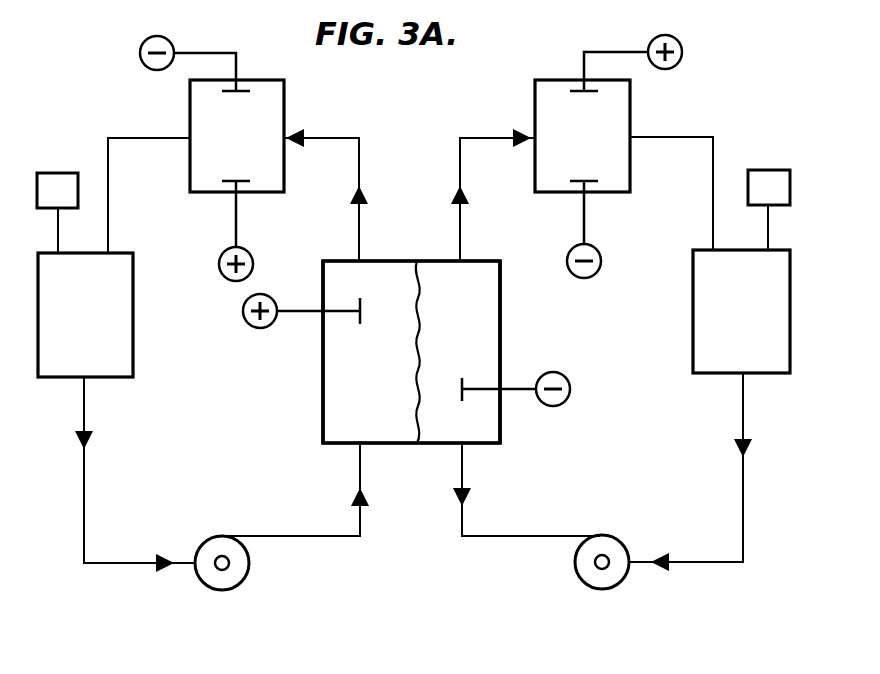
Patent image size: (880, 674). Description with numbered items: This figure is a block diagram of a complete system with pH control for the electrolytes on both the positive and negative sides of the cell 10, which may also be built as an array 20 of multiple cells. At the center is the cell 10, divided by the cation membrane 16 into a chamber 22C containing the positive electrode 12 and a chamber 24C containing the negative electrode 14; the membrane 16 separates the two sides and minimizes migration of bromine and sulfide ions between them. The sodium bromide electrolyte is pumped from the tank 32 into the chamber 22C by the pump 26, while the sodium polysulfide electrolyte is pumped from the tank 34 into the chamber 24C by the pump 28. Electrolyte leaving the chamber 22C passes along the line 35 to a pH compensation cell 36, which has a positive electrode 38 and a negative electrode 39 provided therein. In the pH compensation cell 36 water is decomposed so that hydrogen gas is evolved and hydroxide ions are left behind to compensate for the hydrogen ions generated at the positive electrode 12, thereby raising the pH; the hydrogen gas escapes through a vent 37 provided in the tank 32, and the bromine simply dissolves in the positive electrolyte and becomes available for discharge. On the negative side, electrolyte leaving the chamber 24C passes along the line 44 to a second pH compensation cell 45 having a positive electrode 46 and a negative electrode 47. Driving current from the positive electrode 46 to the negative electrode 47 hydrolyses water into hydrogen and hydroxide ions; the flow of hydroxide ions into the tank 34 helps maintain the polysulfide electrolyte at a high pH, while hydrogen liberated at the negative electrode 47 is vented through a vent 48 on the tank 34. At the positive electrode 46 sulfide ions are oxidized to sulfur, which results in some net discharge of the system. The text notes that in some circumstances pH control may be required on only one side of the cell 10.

The cell 10 is at (499, 311).
The array 20 is at (499, 311).
The positive electrode 12 is at (277, 318).
The negative electrode 14 is at (522, 390).
The cation membrane 16 is at (420, 264).
The chamber 22C is at (322, 382).
The chamber 24C is at (485, 343).
The pump 26 is at (242, 563).
The pump 28 is at (578, 568).
The tank 32 is at (133, 312).
The tank 34 is at (693, 296).
The line 35 is at (322, 137).
The pH compensation cell 36 is at (237, 136).
The vent 37 is at (50, 174).
The positive electrode 38 is at (236, 222).
The negative electrode 39 is at (200, 50).
The line 44 is at (472, 136).
The pH compensation cell 45 is at (582, 136).
The positive electrode 46 is at (600, 50).
The negative electrode 47 is at (584, 222).
The vent 48 is at (762, 170).